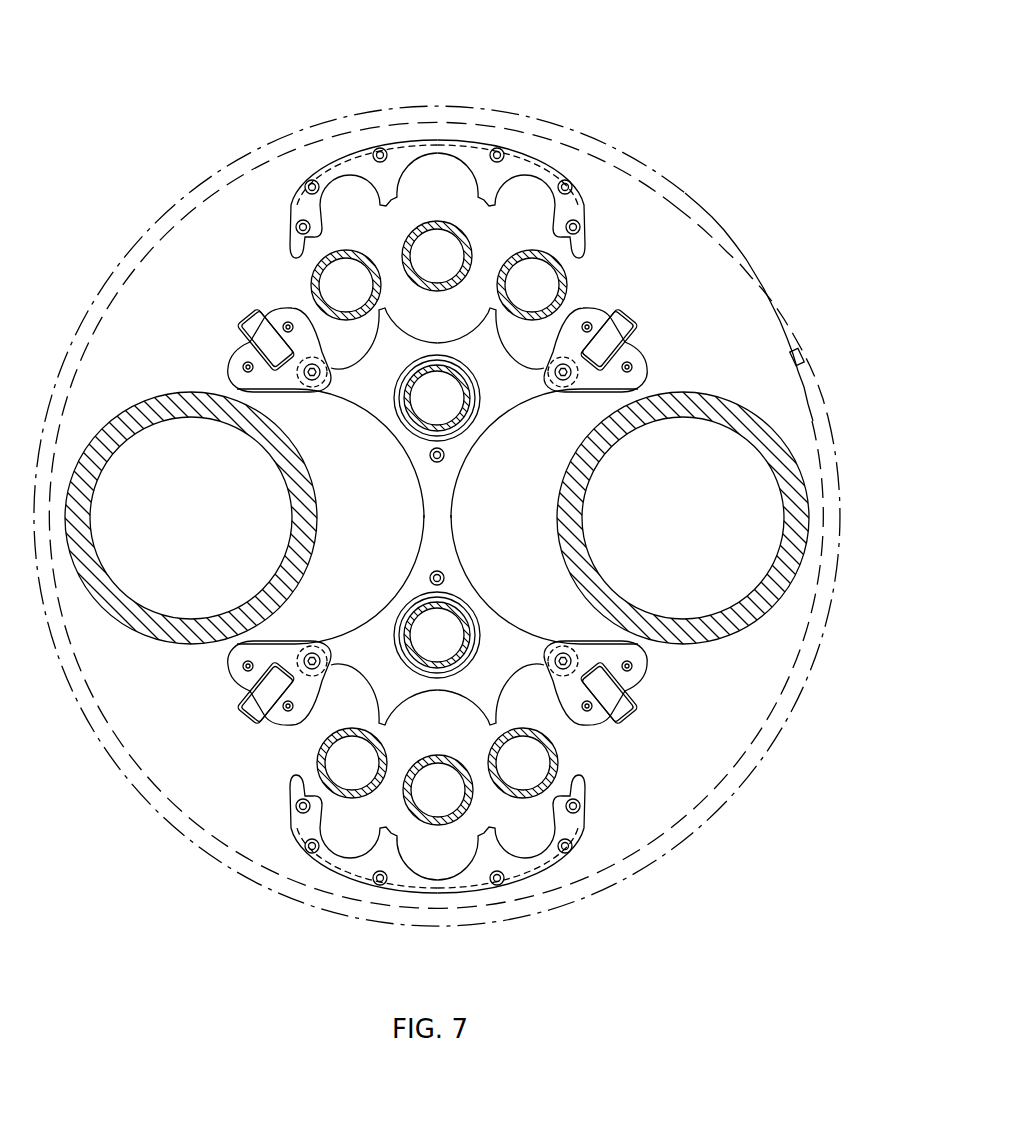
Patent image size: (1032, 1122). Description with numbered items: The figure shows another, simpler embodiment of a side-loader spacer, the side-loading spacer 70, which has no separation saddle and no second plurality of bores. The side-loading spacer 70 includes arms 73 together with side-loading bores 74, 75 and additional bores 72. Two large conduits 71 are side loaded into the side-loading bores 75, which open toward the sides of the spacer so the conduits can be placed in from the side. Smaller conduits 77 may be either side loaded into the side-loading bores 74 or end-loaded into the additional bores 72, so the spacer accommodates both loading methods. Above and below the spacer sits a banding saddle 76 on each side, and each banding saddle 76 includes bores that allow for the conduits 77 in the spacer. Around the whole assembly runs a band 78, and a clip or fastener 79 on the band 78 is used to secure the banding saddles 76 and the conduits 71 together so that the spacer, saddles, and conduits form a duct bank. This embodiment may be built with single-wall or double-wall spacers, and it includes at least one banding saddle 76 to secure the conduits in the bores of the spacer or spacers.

The side-loading spacer 70 is at (845, 238).
The conduits 71 is at (207, 536).
The additional bores 72 is at (454, 414).
The arms 73 is at (466, 432).
The side-loading bores 74 is at (552, 323).
The side-loading bores 75 is at (341, 483).
The banding saddle 76 is at (472, 150).
The conduits 77 is at (462, 230).
The band 78 is at (700, 205).
The clip or fastener 79 is at (799, 364).